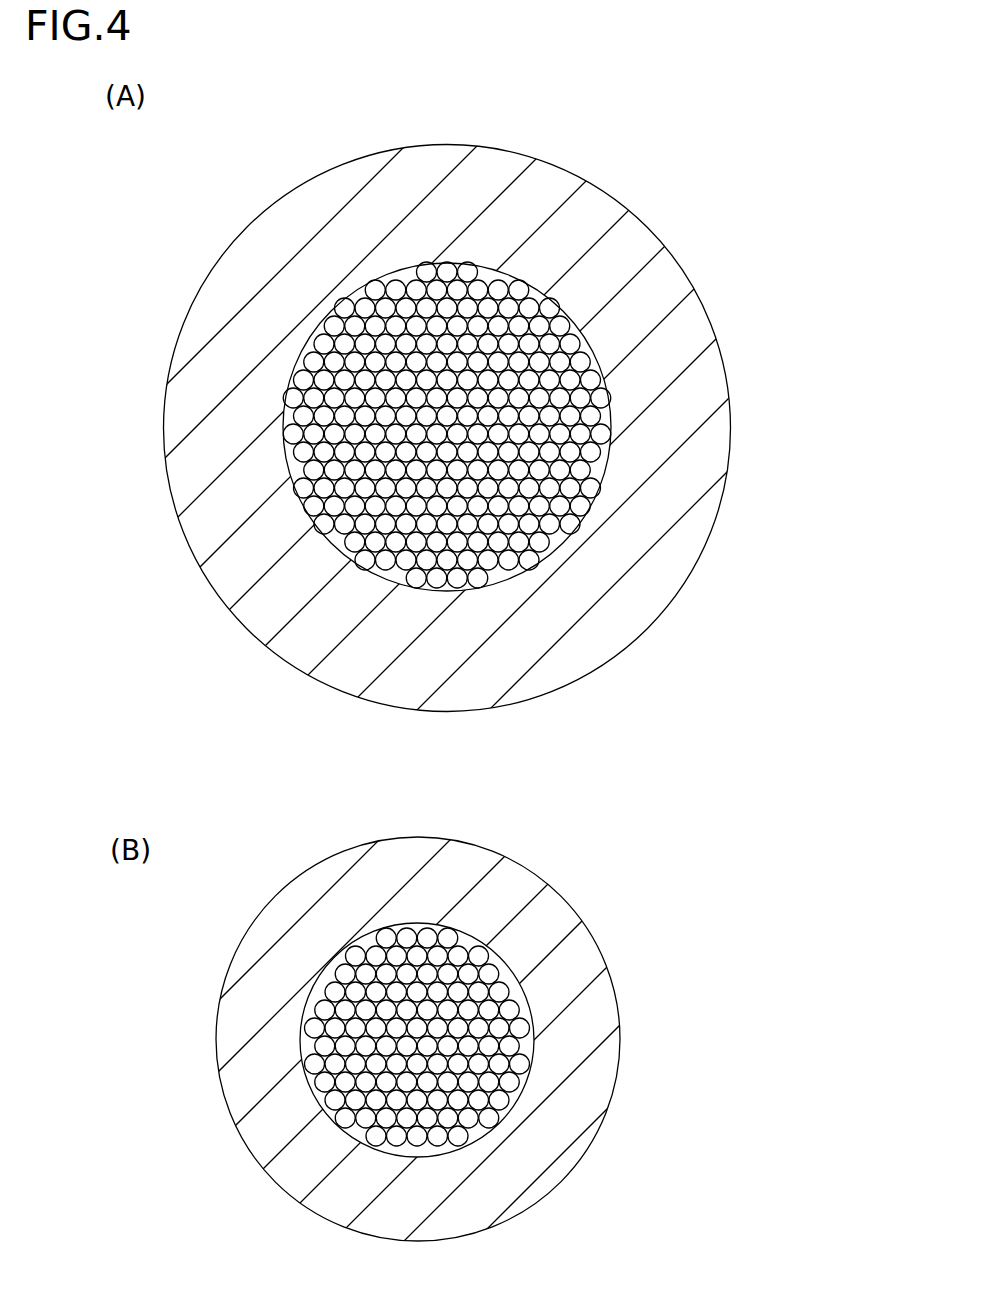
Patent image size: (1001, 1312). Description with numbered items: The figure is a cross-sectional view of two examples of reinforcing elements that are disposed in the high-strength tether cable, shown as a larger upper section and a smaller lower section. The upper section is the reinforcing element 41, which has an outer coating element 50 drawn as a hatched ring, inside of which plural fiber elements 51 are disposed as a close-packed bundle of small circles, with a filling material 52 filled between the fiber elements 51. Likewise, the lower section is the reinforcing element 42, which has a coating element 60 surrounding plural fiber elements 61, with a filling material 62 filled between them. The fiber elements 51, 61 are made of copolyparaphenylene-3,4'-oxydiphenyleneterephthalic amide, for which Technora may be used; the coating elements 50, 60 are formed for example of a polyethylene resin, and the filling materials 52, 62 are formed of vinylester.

The reinforcing element 41 is at (755, 278).
The coating element 50 is at (630, 237).
The fiber elements 51 is at (365, 310).
The filling material 52 is at (360, 363).
The reinforcing element 42 is at (673, 862).
The coating element 60 is at (590, 972).
The fiber elements 61 is at (330, 996).
The filling material 62 is at (338, 1001).